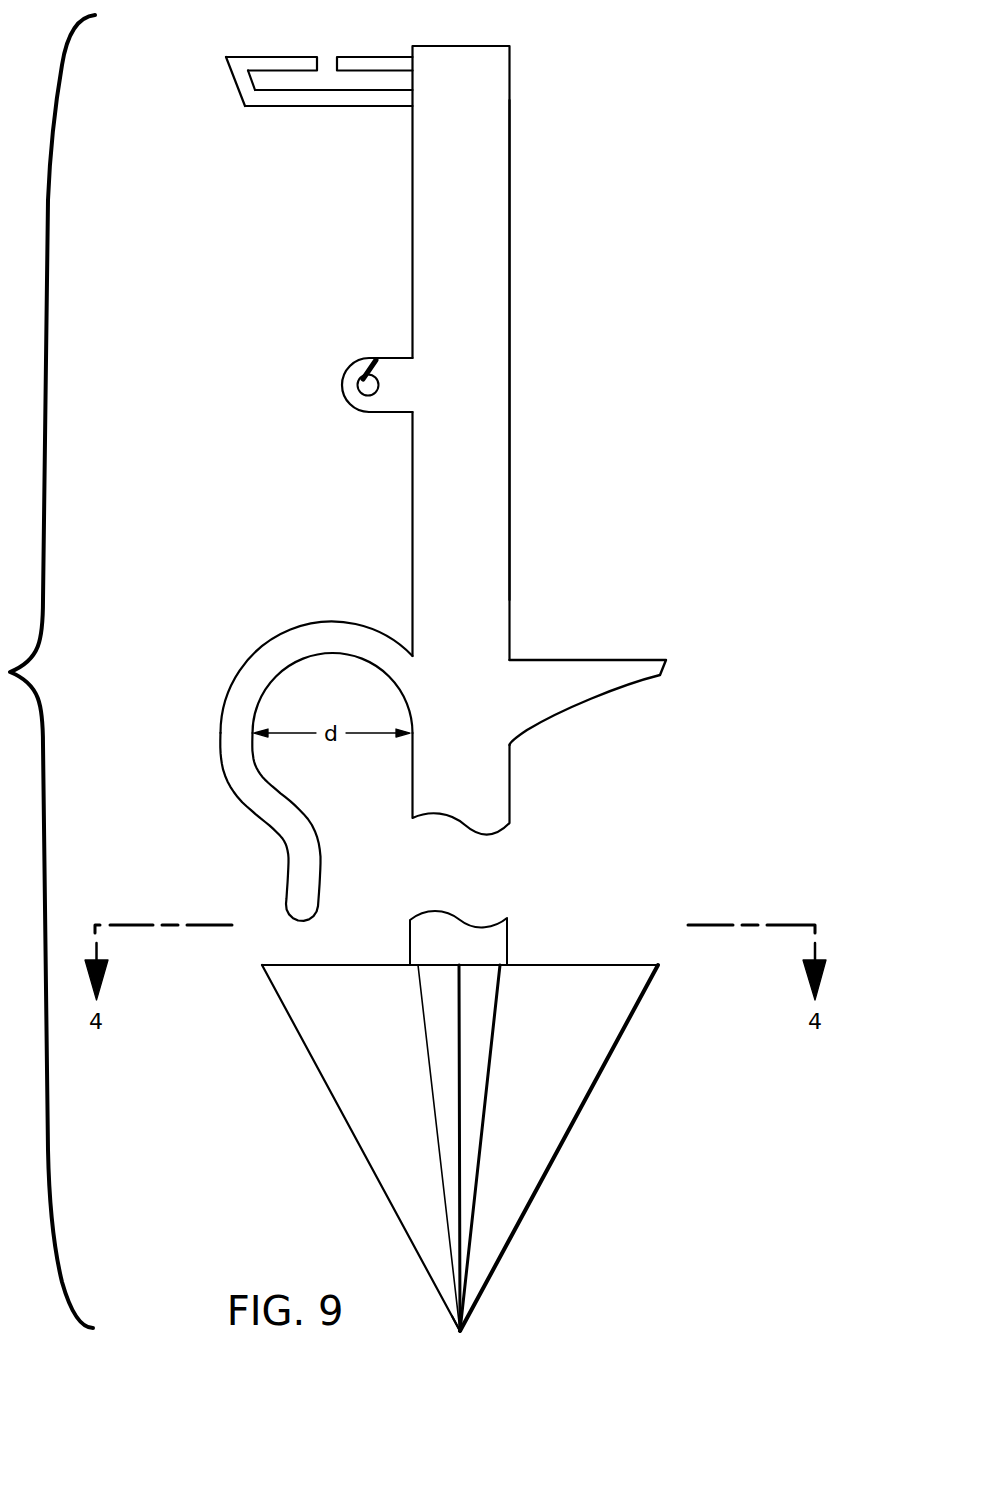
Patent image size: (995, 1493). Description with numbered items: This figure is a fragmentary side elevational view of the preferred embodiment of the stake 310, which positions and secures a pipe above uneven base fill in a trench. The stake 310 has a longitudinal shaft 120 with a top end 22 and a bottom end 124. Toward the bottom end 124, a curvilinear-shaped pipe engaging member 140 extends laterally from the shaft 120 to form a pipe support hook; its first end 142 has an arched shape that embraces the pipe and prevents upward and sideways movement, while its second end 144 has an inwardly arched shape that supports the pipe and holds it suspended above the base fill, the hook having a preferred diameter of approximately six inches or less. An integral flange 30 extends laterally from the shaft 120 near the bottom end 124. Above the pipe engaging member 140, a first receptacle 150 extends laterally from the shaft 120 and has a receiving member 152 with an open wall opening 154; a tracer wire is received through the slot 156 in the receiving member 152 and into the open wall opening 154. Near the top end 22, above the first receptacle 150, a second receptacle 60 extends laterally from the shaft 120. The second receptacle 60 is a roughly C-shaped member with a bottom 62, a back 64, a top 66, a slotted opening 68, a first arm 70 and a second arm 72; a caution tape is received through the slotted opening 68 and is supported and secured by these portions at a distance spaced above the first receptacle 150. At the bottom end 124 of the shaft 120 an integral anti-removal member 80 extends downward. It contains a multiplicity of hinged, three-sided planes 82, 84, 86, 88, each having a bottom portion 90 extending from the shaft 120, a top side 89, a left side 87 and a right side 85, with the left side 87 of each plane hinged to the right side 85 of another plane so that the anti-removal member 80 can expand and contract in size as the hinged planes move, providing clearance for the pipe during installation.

The top end 22 is at (495, 57).
The longitudinal shaft 120 is at (505, 226).
The second receptacle 60 is at (219, 40).
The first arm 70 is at (276, 57).
The second arm 72 is at (387, 62).
The slotted opening 68 is at (325, 44).
The top 66 is at (240, 78).
The back 64 is at (296, 98).
The bottom 62 is at (410, 83).
The first receptacle 150 is at (349, 346).
The receiving member 152 is at (401, 402).
The open wall opening 154 is at (360, 383).
The slot 156 is at (371, 370).
The pipe engaging member 140 is at (257, 626).
The first end 142 is at (333, 640).
The second end 144 is at (297, 848).
The flange 30 is at (597, 645).
The stake 310 is at (590, 367).
The bottom end 124 is at (503, 949).
The anti-removal member 80 is at (695, 1168).
The hinged three-sided plane 82 is at (615, 977).
The hinged three-sided plane 84 is at (470, 1158).
The right side 85 is at (445, 1237).
The hinged three-sided plane 86 is at (440, 1103).
The left side 87 is at (302, 1046).
The hinged three-sided plane 88 is at (303, 975).
The top side 89 is at (386, 962).
The bottom portion 90 is at (468, 1328).